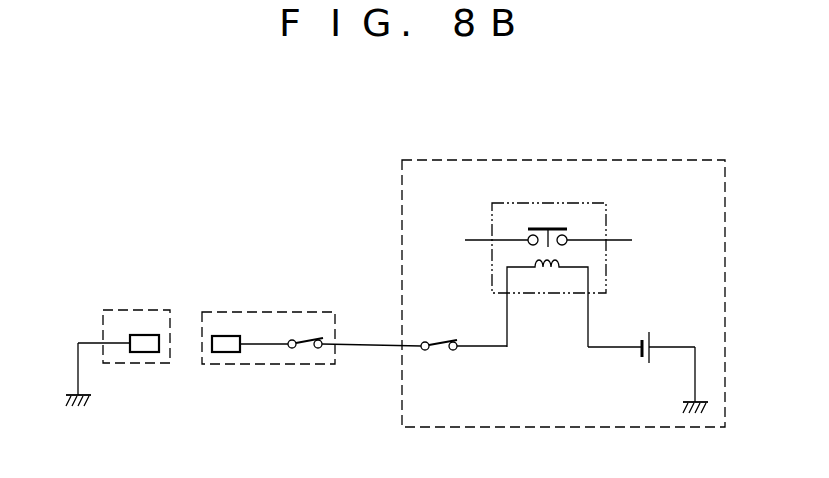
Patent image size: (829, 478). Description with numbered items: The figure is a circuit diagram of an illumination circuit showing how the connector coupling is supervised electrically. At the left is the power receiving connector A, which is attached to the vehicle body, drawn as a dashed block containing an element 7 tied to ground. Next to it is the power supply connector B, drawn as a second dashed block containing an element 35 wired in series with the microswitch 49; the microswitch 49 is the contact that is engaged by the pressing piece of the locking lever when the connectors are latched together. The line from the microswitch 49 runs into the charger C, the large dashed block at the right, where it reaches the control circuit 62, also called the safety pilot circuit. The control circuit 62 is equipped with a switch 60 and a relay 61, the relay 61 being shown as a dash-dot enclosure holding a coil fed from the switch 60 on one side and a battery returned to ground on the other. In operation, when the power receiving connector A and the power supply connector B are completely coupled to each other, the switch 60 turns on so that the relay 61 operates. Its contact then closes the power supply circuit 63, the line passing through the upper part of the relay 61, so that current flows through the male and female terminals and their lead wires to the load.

The power receiving connector A is at (150, 308).
The power supply connector B is at (297, 310).
The charger C is at (497, 158).
The sensor resistor 7 is at (148, 352).
The resistor 35 is at (228, 352).
The microswitch 49 is at (305, 352).
The switch 60 is at (440, 338).
The relay 61 is at (606, 220).
The control circuit 62 is at (546, 335).
The power supply circuit 63 is at (471, 240).